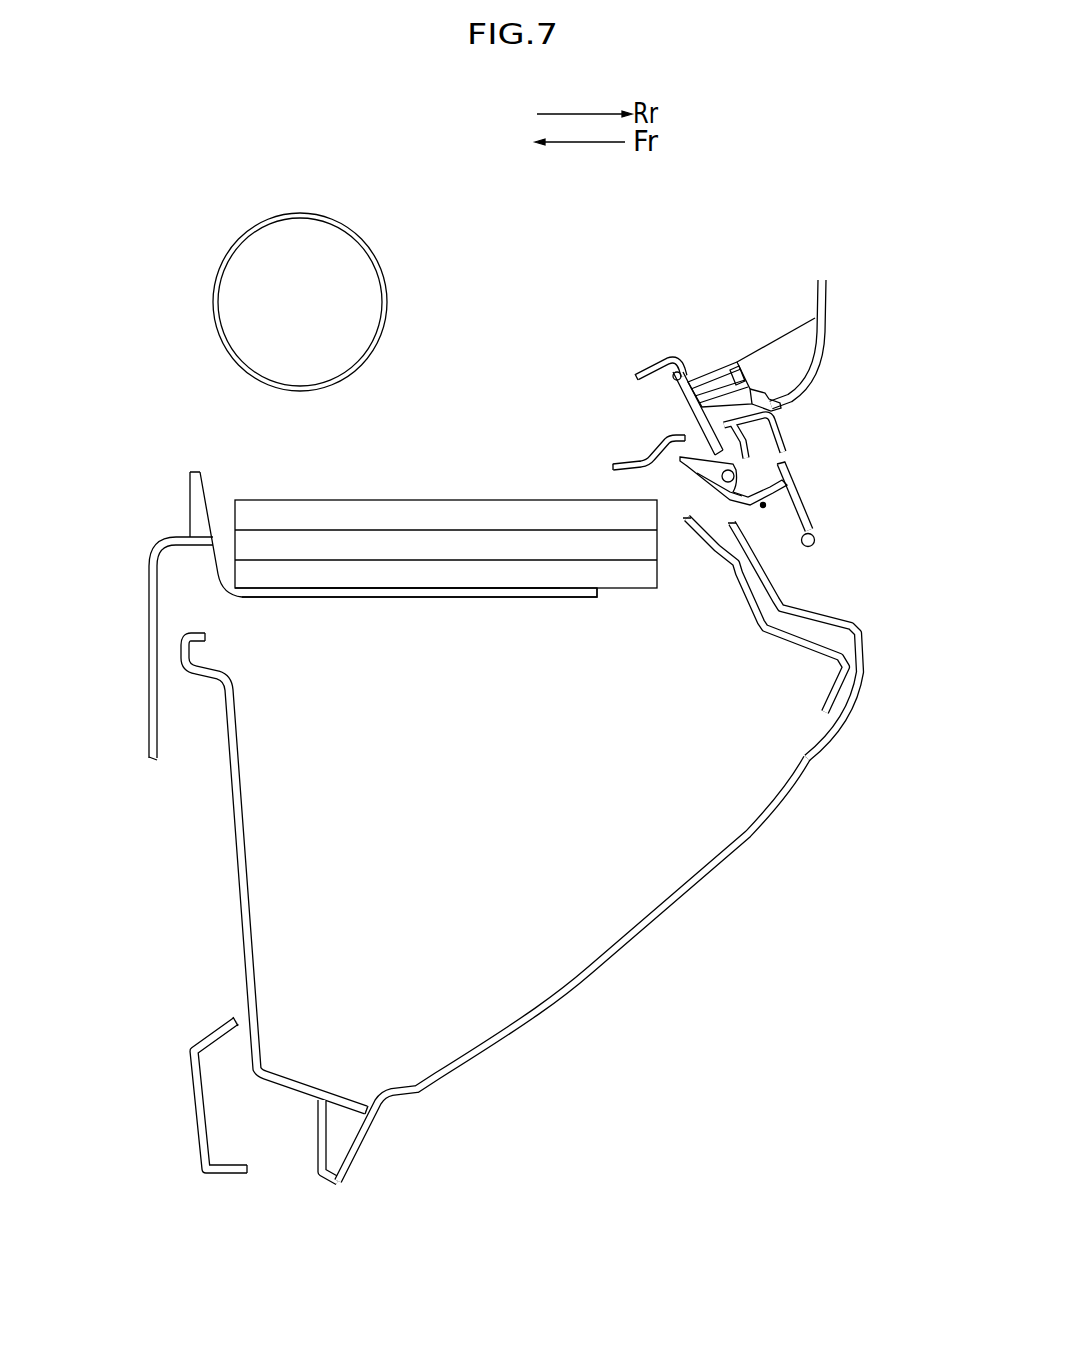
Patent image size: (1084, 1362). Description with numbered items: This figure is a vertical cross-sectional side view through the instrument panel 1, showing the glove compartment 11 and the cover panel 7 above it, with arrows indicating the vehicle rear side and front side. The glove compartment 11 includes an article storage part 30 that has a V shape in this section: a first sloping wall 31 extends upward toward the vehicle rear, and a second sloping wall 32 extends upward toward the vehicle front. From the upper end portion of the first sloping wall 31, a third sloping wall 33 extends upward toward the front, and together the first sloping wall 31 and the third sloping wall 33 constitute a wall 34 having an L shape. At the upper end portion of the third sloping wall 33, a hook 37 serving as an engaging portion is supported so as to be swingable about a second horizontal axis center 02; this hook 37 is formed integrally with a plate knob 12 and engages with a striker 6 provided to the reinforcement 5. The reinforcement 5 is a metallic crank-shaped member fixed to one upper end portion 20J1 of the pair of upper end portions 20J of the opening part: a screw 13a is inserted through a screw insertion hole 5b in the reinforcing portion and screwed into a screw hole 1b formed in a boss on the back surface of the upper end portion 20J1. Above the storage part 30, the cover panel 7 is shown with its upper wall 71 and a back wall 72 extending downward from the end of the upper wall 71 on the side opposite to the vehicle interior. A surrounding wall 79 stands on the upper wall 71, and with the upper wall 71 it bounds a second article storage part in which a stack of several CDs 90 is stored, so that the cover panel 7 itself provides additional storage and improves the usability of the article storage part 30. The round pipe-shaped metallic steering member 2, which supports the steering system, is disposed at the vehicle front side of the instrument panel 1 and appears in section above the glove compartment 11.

The instrument panel 1 is at (196, 1141).
The steering member 2 is at (352, 231).
The reinforcement 5 is at (652, 354).
The screw insertion hole 5b is at (685, 376).
The screw hole 1b is at (728, 368).
The upper end portion 20J1 is at (752, 371).
The upper end portions 20J is at (837, 345).
The screw 13a is at (689, 392).
The third sloping wall 33 is at (781, 433).
The wall 34 is at (615, 794).
The striker 6 is at (740, 475).
The hook 37 is at (687, 468).
The plate knob 12 is at (794, 488).
The second horizontal axis center 02 is at (763, 508).
The surrounding wall 79 is at (190, 493).
The CDs 90 is at (405, 512).
The cover panel 7 is at (372, 600).
The upper wall 71 is at (463, 598).
The back wall 72 is at (161, 713).
The article storage part 30 is at (489, 816).
The second sloping wall 32 is at (238, 870).
The glove compartment 11 is at (665, 940).
The first sloping wall 31 is at (583, 984).